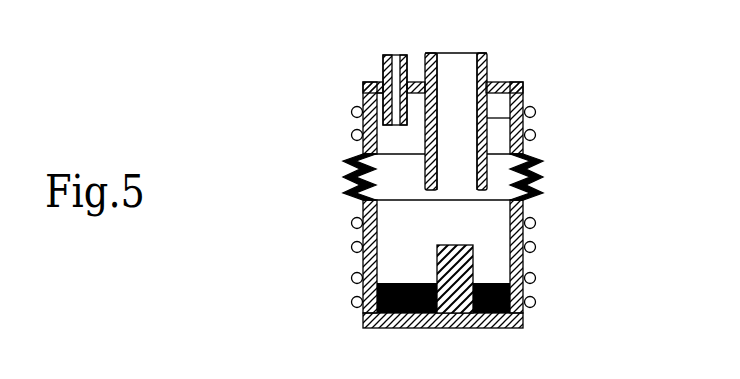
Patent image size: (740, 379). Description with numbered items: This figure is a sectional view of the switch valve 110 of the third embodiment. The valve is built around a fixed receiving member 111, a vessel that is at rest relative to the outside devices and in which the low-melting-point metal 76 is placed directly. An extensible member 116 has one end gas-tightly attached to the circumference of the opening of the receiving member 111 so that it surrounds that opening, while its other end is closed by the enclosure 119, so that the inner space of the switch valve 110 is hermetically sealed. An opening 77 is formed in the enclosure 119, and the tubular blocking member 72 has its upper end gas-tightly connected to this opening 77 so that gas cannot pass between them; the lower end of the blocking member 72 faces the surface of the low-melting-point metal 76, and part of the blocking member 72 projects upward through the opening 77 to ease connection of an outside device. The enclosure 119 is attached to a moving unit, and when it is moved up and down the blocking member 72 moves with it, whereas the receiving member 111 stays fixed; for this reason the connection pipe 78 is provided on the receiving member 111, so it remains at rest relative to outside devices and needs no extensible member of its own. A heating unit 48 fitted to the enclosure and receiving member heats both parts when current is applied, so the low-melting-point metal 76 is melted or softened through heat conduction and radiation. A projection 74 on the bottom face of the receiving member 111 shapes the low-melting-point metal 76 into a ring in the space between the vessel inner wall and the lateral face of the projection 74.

The switch valve 110 is at (286, 43).
The enclosure 119 is at (362, 125).
The blocking member 72 is at (535, 118).
The connection pipe 78 is at (383, 71).
The opening 77 is at (487, 61).
The extensible member 116 is at (543, 163).
The receiving member 111 is at (362, 206).
The low-melting-point metal 76 is at (500, 283).
The projection 74 is at (452, 246).
The heating unit 48 is at (537, 278).